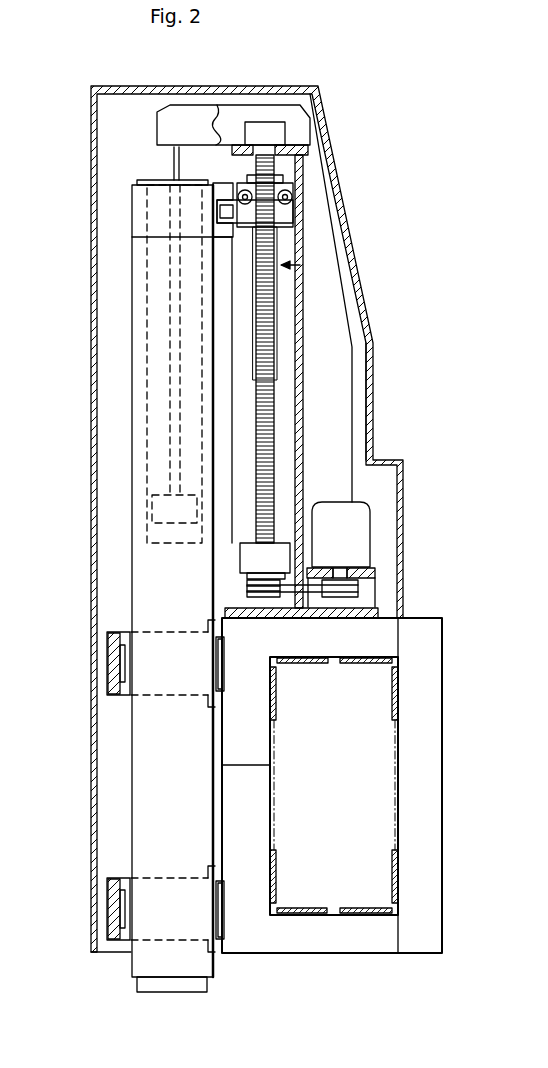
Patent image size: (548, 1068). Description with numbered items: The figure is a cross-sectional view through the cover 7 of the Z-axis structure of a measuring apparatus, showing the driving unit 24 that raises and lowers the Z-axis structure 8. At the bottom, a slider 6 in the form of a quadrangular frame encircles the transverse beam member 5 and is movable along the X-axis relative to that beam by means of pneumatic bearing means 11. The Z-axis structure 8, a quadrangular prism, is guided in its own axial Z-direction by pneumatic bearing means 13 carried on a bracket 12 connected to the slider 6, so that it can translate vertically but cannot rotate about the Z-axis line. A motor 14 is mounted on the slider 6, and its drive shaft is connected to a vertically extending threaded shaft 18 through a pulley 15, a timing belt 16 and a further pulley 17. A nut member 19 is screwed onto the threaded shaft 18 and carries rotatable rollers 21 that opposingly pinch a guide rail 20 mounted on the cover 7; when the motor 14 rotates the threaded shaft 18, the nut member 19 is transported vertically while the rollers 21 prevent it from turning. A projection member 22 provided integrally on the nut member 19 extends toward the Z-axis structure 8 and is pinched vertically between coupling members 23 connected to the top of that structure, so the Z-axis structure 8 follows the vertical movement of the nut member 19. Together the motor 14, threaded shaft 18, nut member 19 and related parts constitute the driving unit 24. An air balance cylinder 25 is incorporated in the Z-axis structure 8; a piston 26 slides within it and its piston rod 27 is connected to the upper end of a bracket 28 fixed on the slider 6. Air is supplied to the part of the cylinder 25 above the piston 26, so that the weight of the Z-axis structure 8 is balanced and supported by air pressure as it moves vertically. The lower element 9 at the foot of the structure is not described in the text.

The transverse beam member 5 is at (400, 790).
The slider 6 is at (395, 642).
The cover 7 is at (91, 348).
The Z-axis structure 8 is at (131, 770).
The foot 9 is at (175, 995).
The pneumatic bearing means 11 is at (272, 705).
The bracket 12 is at (131, 632).
The pneumatic bearing means 13 is at (108, 665).
The motor 14 is at (365, 522).
The pulley 15 is at (358, 600).
The timing belt 16 is at (313, 605).
The pulley 17 is at (245, 600).
The threaded shaft 18 is at (274, 452).
The nut member 19 is at (298, 222).
The guide rail 20 is at (283, 300).
The rotatable rollers 21 is at (247, 195).
The projection member 22 is at (230, 218).
The coupling members 23 is at (222, 178).
The driving unit 24 is at (300, 265).
The air balance cylinder 25 is at (147, 395).
The piston 26 is at (152, 507).
The piston rod 27 is at (170, 265).
The bracket 28 is at (303, 390).